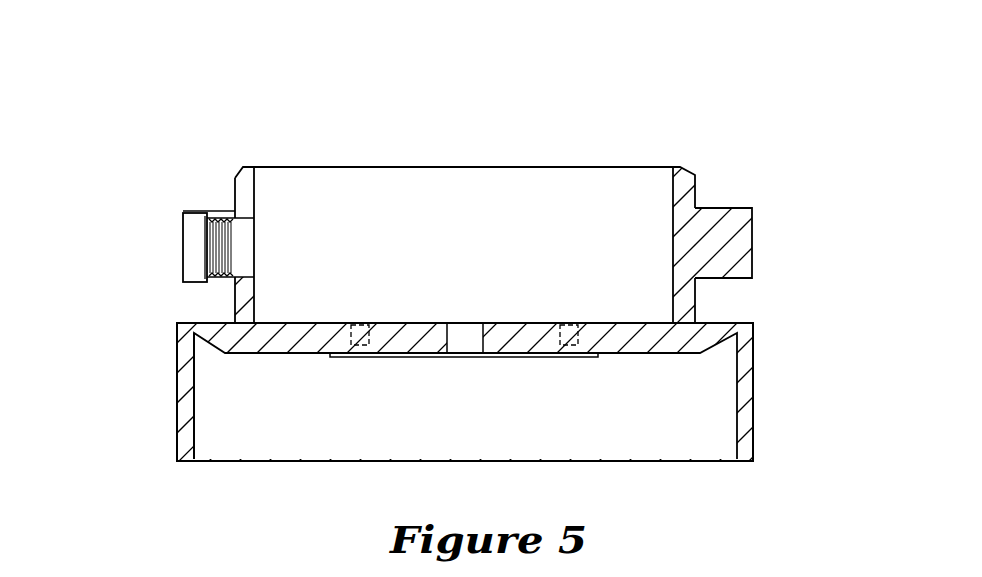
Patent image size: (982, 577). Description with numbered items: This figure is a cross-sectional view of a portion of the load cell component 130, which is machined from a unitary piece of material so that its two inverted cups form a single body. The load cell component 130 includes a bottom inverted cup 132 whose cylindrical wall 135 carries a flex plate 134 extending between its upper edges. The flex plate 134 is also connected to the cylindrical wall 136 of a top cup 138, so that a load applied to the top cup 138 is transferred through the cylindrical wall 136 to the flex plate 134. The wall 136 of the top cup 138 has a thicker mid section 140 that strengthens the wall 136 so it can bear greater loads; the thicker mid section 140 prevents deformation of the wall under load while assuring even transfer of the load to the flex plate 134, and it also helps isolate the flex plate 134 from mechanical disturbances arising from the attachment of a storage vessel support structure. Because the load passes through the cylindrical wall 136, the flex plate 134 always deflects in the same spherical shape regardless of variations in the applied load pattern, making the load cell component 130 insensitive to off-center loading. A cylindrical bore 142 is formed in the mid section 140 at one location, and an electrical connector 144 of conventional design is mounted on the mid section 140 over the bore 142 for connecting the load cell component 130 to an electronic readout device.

The load cell component 130 is at (744, 111).
The bottom inverted cup 132 is at (742, 388).
The flex plate 134 is at (512, 333).
The cylindrical wall 135 is at (177, 355).
The cylindrical wall 136 is at (234, 302).
The top cup 138 is at (678, 180).
The thicker mid section 140 is at (713, 253).
The cylindrical bore 142 is at (243, 243).
The electrical connector 144 is at (213, 217).